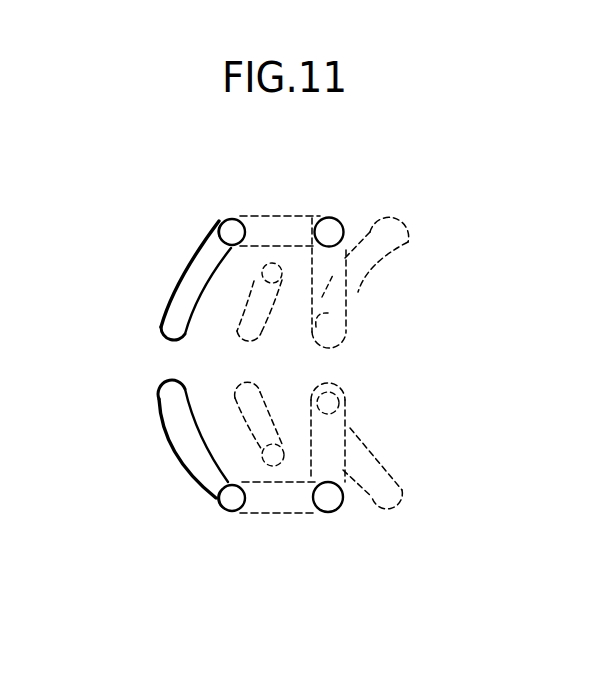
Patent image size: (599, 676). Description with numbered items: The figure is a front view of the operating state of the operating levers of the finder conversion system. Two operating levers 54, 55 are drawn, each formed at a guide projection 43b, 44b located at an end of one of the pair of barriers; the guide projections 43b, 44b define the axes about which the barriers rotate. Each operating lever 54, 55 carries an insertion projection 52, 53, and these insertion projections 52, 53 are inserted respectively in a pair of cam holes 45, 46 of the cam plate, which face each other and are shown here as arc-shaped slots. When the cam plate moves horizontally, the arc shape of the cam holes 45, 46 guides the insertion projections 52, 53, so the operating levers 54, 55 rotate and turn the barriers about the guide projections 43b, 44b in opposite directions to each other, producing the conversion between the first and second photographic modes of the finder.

The cam hole 45 is at (178, 283).
The cam hole 46 is at (180, 442).
The insertion projection 52 is at (226, 226).
The insertion projection 53 is at (228, 506).
The operating lever 54 is at (277, 226).
The operating lever 55 is at (268, 516).
The guide projection 43b is at (340, 217).
The guide projection 44b is at (340, 512).